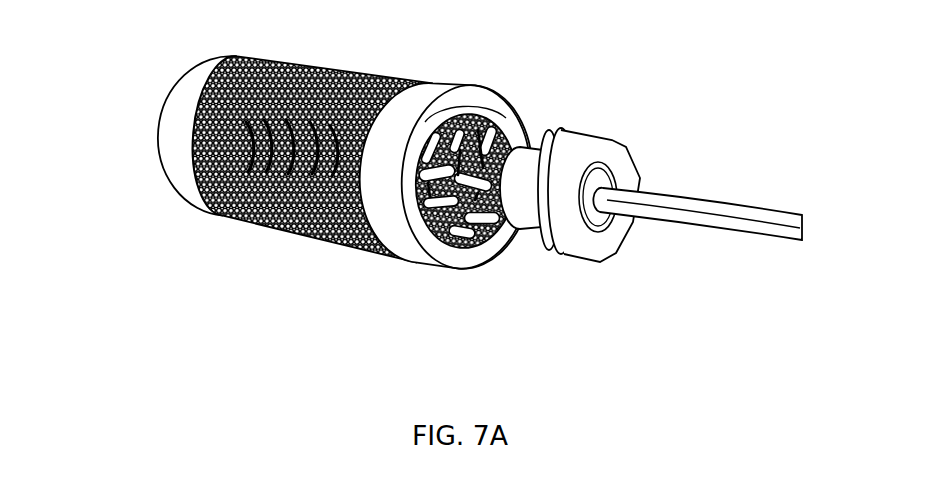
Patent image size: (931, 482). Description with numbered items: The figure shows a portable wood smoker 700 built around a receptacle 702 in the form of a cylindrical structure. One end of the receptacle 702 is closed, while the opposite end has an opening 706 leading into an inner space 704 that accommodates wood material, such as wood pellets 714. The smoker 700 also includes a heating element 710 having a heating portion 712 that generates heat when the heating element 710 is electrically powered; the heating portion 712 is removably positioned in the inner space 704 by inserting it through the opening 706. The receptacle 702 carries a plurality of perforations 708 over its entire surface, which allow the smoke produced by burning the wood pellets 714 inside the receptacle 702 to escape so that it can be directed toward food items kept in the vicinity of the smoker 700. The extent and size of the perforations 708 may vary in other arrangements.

The portable wood smoker 700 is at (171, 330).
The receptacle 702 is at (433, 91).
The inner space 704 is at (472, 115).
The opening 706 is at (516, 137).
The perforations 708 is at (210, 128).
The heating element 710 is at (683, 206).
The heating portion 712 is at (514, 227).
The wood pellets 714 is at (499, 203).